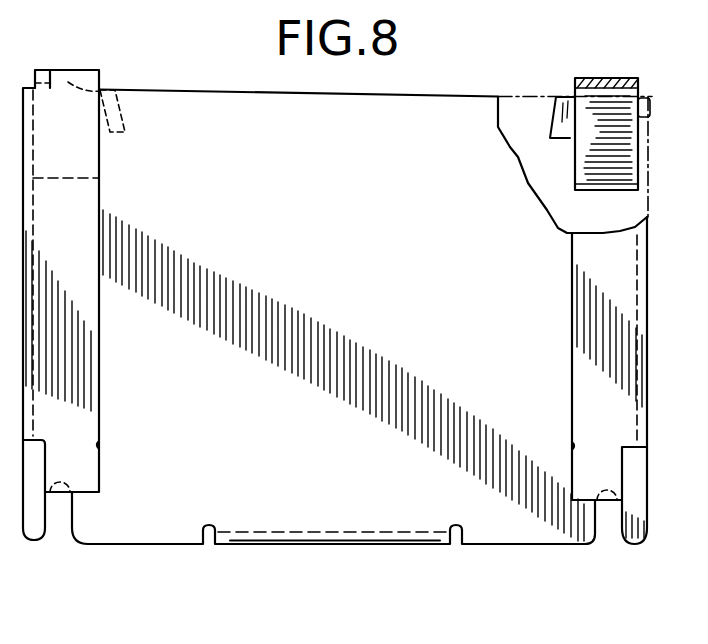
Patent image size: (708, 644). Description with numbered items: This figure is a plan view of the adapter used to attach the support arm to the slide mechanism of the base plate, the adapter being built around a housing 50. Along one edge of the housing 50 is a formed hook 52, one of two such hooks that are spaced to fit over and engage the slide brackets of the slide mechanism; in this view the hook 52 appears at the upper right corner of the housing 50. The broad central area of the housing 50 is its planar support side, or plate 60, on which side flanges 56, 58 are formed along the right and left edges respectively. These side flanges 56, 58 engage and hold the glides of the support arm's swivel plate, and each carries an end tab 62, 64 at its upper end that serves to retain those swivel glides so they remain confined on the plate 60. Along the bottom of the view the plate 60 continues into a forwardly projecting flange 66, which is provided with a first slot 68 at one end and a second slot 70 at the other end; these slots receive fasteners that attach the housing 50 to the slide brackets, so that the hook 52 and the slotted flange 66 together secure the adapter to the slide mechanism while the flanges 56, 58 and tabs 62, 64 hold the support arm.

The housing 50 is at (173, 503).
The first formed hook 52 is at (617, 103).
The side flange 56 is at (627, 350).
The side flange 58 is at (100, 336).
The planar support side 60 is at (507, 316).
The end tab 62 is at (702, 111).
The end tab 64 is at (100, 88).
The forwardly projecting flange 66 is at (498, 533).
The first slot 68 is at (620, 527).
The second slot 70 is at (47, 528).